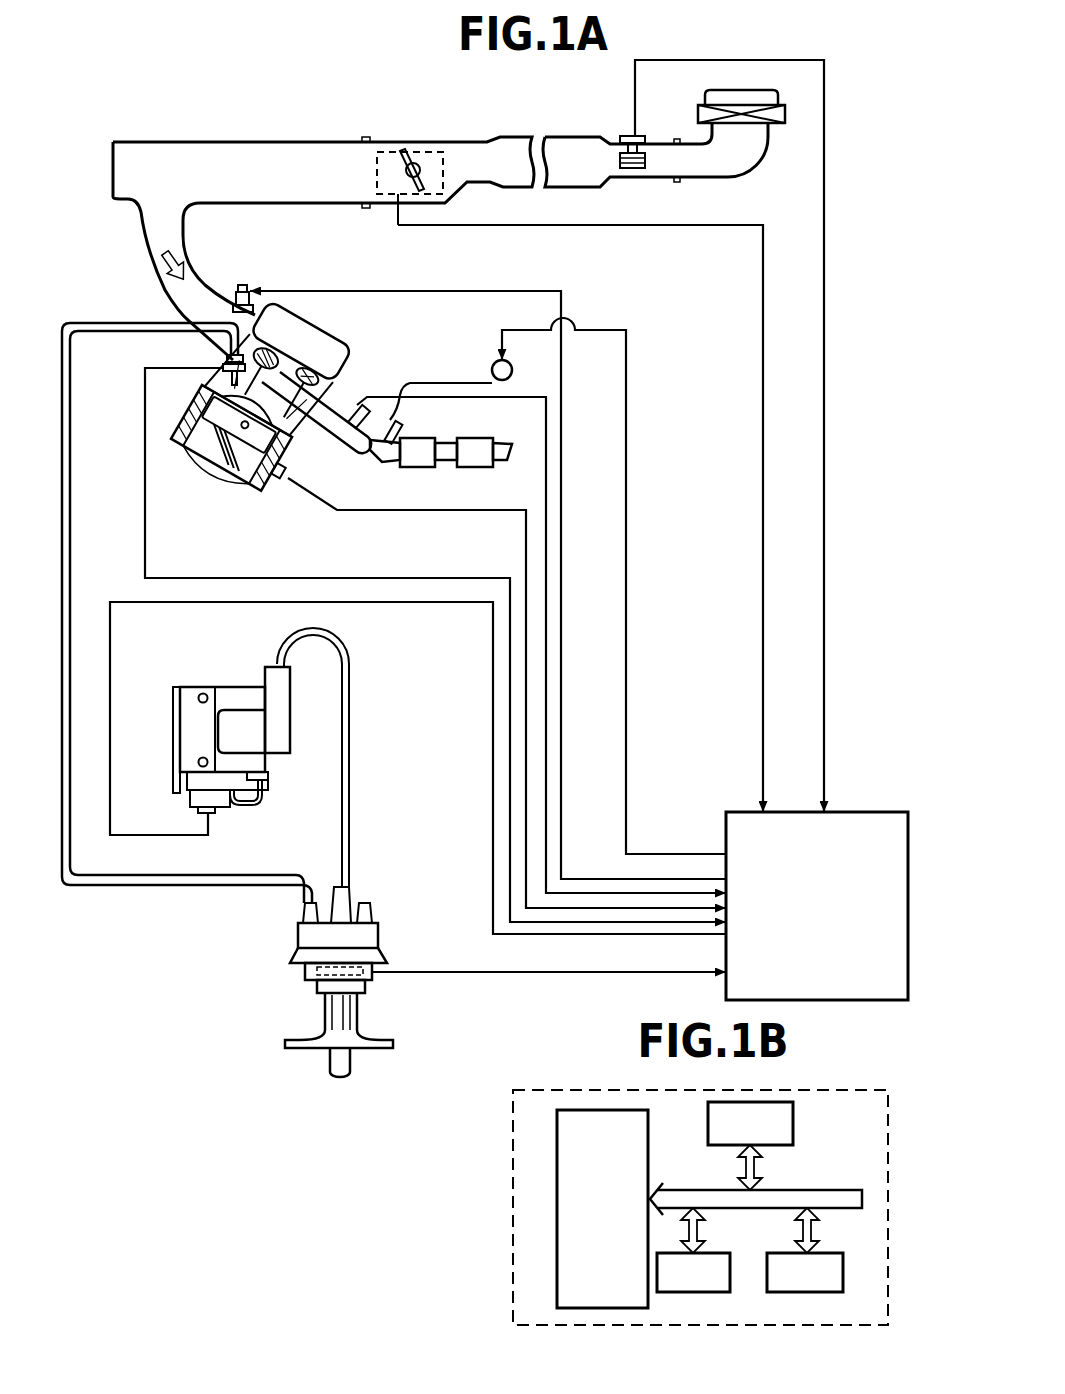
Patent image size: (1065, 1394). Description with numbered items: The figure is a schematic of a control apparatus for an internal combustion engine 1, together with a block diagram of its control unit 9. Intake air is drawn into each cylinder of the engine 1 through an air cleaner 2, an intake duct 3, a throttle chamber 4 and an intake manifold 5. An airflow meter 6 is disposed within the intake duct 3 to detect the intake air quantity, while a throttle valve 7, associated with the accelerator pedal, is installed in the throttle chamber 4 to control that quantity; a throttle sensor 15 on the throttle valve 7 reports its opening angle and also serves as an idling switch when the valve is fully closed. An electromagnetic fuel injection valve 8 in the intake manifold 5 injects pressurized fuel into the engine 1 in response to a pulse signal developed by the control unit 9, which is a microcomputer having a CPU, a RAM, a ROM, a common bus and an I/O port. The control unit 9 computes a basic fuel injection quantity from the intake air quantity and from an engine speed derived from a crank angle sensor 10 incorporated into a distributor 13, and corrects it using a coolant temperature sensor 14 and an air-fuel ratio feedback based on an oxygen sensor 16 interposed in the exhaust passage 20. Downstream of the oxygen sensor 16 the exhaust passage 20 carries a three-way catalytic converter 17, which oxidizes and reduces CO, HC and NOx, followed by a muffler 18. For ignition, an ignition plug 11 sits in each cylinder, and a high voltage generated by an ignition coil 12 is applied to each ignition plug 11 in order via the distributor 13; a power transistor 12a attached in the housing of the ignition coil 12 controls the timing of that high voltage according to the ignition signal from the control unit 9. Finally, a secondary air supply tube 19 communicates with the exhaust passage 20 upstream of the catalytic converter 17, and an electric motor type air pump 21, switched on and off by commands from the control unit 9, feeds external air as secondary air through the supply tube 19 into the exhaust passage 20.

In FIG. 1A, the internal combustion engine 1 is at (352, 373).
In FIG. 1A, the air cleaner 2 is at (777, 105).
In FIG. 1A, the intake duct 3 is at (575, 137).
In FIG. 1A, the throttle chamber 4 is at (470, 143).
In FIG. 1A, the intake manifold 5 is at (142, 253).
In FIG. 1A, the airflow meter 6 is at (645, 136).
In FIG. 1B, the airflow meter 6 is at (557, 1120).
In FIG. 1A, the throttle valve 7 is at (412, 180).
In FIG. 1A, the electromagnetic fuel injection valve 8 is at (238, 283).
In FIG. 1B, the electromagnetic fuel injection valve 8 is at (557, 1185).
In FIG. 1A, the control unit 9 is at (863, 812).
In FIG. 1B, the control unit 9 is at (863, 1092).
In FIG. 1A, the crank angle sensor 10 is at (366, 988).
In FIG. 1A, the ignition plug 11 is at (182, 328).
In FIG. 1A, the ignition coil 12 is at (200, 687).
In FIG. 1A, the power transistor 12a is at (217, 813).
In FIG. 1B, the power transistor 12a is at (557, 1274).
In FIG. 1A, the distributor 13 is at (378, 936).
In FIG. 1B, the distributor 13 is at (557, 1296).
In FIG. 1A, the coolant temperature sensor 14 is at (280, 483).
In FIG. 1B, the coolant temperature sensor 14 is at (557, 1230).
In FIG. 1A, the throttle sensor 15 is at (385, 152).
In FIG. 1B, the throttle sensor 15 is at (557, 1143).
In FIG. 1A, the oxygen sensor 16 is at (353, 434).
In FIG. 1B, the oxygen sensor 16 is at (557, 1207).
In FIG. 1A, the three-way catalytic converter 17 is at (430, 438).
In FIG. 1A, the muffler 18 is at (488, 438).
In FIG. 1A, the secondary air supply tube 19 is at (394, 452).
In FIG. 1A, the exhaust passage 20 is at (322, 415).
In FIG. 1A, the electric motor type air pump 21 is at (220, 352).
In FIG. 1B, the electric motor type air pump 21 is at (557, 1165).